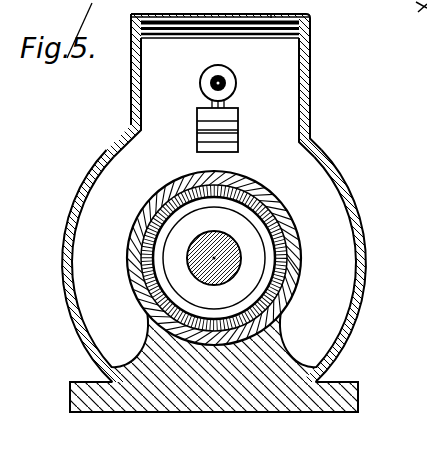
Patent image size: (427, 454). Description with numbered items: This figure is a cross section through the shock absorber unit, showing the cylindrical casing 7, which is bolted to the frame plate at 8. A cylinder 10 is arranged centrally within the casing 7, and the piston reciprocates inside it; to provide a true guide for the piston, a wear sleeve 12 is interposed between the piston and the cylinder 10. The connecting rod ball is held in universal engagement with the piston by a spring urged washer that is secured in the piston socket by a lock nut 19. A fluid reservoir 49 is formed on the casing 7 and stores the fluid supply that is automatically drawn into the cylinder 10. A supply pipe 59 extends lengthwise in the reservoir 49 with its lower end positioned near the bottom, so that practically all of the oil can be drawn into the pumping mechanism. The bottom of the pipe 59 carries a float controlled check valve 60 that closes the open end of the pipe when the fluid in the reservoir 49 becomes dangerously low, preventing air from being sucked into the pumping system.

The cylindrical casing 7 is at (365, 228).
The bolting point 8 is at (338, 397).
The cylinder 10 is at (263, 188).
The wear sleeve 12 is at (143, 212).
The lock nut 19 is at (214, 258).
The fluid reservoir 49 is at (307, 58).
The supply pipe 59 is at (232, 82).
The float controlled check valve 60 is at (218, 115).